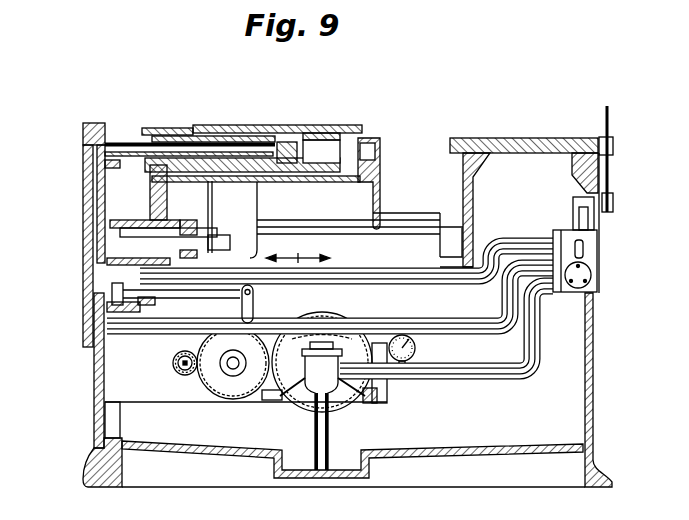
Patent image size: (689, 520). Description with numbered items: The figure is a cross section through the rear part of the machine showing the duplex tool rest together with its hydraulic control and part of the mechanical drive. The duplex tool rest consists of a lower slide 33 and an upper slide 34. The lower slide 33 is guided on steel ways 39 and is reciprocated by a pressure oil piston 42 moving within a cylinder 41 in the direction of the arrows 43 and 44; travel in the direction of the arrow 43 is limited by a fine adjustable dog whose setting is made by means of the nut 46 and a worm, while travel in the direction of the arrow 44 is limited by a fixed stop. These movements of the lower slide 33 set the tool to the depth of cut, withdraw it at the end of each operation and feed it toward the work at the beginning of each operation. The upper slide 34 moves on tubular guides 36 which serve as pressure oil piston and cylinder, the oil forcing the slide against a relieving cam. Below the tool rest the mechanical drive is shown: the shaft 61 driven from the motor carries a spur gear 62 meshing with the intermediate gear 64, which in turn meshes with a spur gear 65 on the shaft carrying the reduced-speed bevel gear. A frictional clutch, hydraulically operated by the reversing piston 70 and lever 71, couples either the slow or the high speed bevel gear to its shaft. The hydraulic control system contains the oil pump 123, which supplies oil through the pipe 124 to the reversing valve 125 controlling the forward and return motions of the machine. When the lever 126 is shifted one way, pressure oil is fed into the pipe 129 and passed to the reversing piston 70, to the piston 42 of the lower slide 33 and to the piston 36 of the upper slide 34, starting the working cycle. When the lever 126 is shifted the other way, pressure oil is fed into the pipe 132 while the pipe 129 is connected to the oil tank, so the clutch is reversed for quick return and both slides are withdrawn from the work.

The lower slide 33 is at (380, 172).
The upper slide 34 is at (277, 125).
The tubular guides 36 is at (328, 147).
The steel ways 39 is at (402, 218).
The cylinder 41 is at (128, 222).
The pressure oil piston 42 is at (100, 230).
The arrow 43 is at (319, 248).
The arrow 44 is at (281, 249).
The nut 46 is at (593, 330).
The shaft 61 is at (177, 371).
The spur gear 62 is at (172, 362).
The intermediate gear 64 is at (207, 386).
The spur gear 65 is at (343, 407).
The reversing piston 70 is at (98, 287).
The lever 71 is at (253, 304).
The oil pump 123 is at (313, 406).
The pipe 124 is at (460, 373).
The reversing valve 125 is at (598, 256).
The lever 126 is at (606, 123).
The pipe 129 is at (407, 330).
The pipe 132 is at (395, 278).